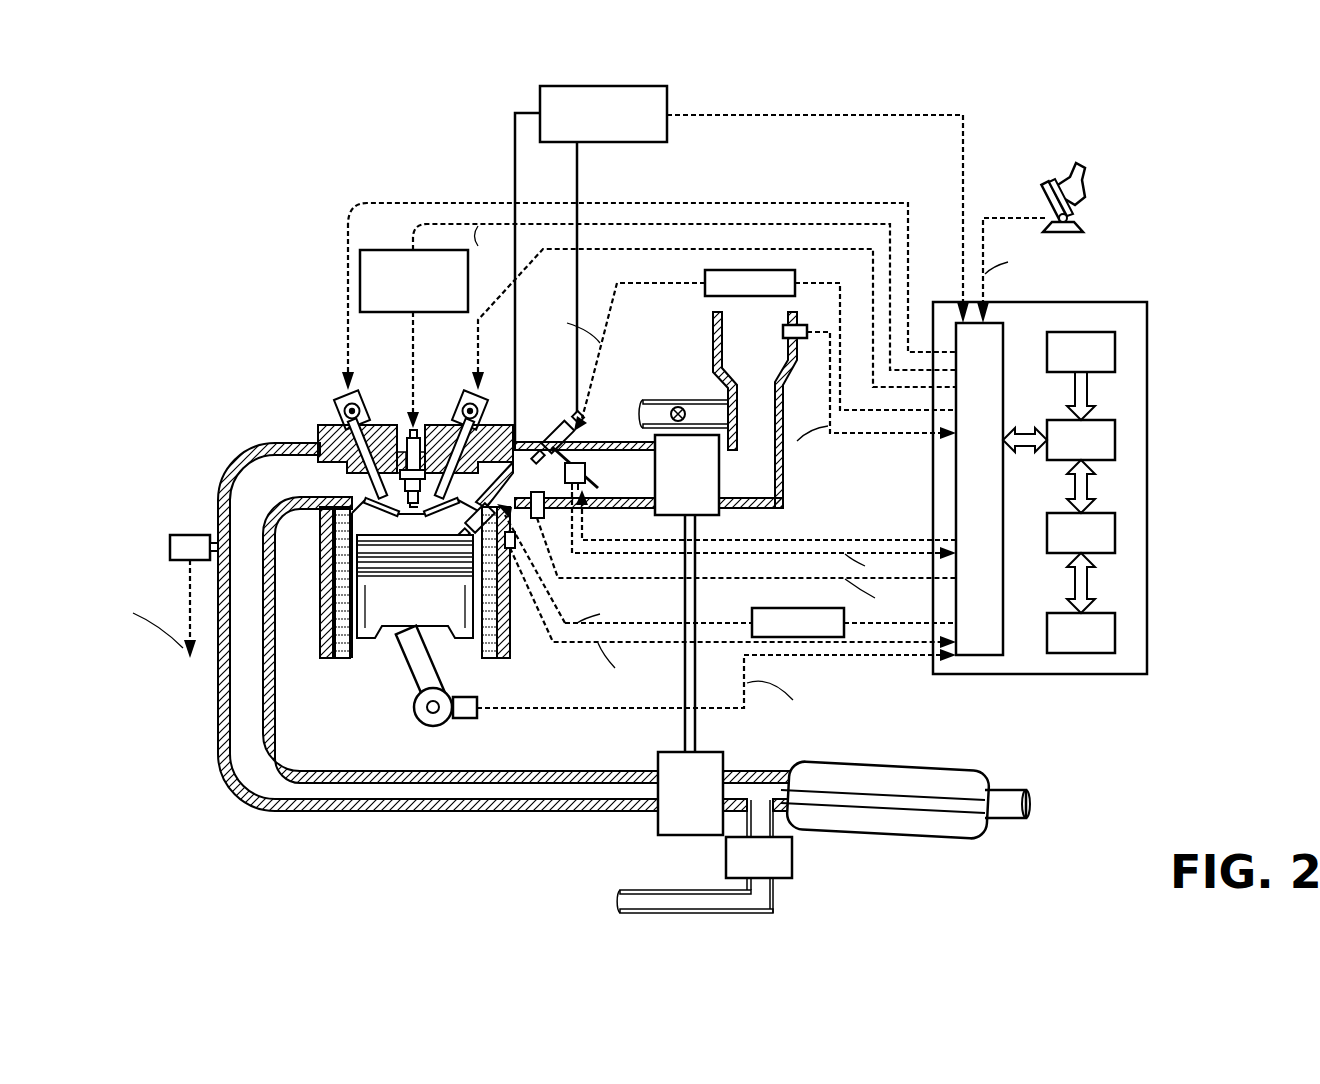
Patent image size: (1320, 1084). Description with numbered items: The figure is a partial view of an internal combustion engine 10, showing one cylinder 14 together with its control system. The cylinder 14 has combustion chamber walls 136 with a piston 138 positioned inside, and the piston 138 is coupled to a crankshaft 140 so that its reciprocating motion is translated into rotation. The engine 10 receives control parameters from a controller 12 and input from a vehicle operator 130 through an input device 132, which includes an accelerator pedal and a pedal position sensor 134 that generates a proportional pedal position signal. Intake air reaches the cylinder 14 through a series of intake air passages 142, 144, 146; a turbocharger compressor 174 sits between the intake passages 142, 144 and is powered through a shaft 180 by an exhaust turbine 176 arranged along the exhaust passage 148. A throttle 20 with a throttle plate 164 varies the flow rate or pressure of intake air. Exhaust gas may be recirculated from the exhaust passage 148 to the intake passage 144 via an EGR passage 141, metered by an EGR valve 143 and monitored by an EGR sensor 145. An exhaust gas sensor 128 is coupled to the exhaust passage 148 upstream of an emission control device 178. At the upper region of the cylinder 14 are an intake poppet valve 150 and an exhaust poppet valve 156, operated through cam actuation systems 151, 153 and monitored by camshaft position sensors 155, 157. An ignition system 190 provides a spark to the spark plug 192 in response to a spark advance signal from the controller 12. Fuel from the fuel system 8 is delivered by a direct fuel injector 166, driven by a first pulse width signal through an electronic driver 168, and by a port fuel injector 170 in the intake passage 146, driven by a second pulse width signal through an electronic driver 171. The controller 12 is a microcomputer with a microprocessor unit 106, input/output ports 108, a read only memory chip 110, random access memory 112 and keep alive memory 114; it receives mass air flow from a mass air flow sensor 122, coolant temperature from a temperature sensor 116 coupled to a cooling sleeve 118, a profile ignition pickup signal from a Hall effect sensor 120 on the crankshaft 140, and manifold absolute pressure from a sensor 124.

The fuel system 8 is at (650, 137).
The internal combustion engine 10 is at (270, 282).
The controller 12 is at (1147, 312).
The cylinder 14 is at (328, 538).
The throttle 20 is at (576, 462).
The microprocessor unit 106 is at (1115, 442).
The input/output ports 108 is at (1005, 328).
The read only memory chip 110 is at (1115, 352).
The random access memory 112 is at (1115, 535).
The keep alive memory 114 is at (1115, 635).
The temperature sensor 116 is at (516, 552).
The cooling sleeve 118 is at (494, 658).
The Hall effect sensor 120 is at (471, 720).
The mass air flow sensor 122 is at (800, 326).
The manifold absolute pressure sensor 124 is at (545, 522).
The exhaust gas sensor 128 is at (170, 541).
The vehicle operator 130 is at (1087, 183).
The input device 132 is at (1046, 192).
The pedal position sensor 134 is at (1072, 224).
The combustion chamber walls 136 is at (348, 662).
The piston 138 is at (400, 617).
The crankshaft 140 is at (425, 726).
The EGR passage 141 is at (662, 402).
The intake air passage 142 is at (776, 358).
The EGR valve 143 is at (684, 406).
The intake air passage 144 is at (648, 481).
The EGR sensor 145 is at (792, 866).
The intake air passage 146 is at (551, 485).
The exhaust passage 148 is at (310, 494).
The intake poppet valve 150 is at (427, 447).
The cam actuation system 151 is at (462, 392).
The cam actuation system 153 is at (360, 392).
The camshaft position sensor 155 is at (458, 487).
The exhaust poppet valve 156 is at (363, 487).
The camshaft position sensor 157 is at (343, 401).
The throttle plate 164 is at (546, 441).
The fuel injector 166 is at (510, 550).
The electronic driver 168 is at (752, 612).
The fuel injector 170 is at (560, 425).
The electronic driver 171 is at (705, 279).
The compressor 174 is at (719, 516).
The exhaust turbine 176 is at (658, 826).
The emission control device 178 is at (852, 774).
The shaft 180 is at (700, 723).
The ignition system 190 is at (377, 250).
The spark plug 192 is at (401, 370).